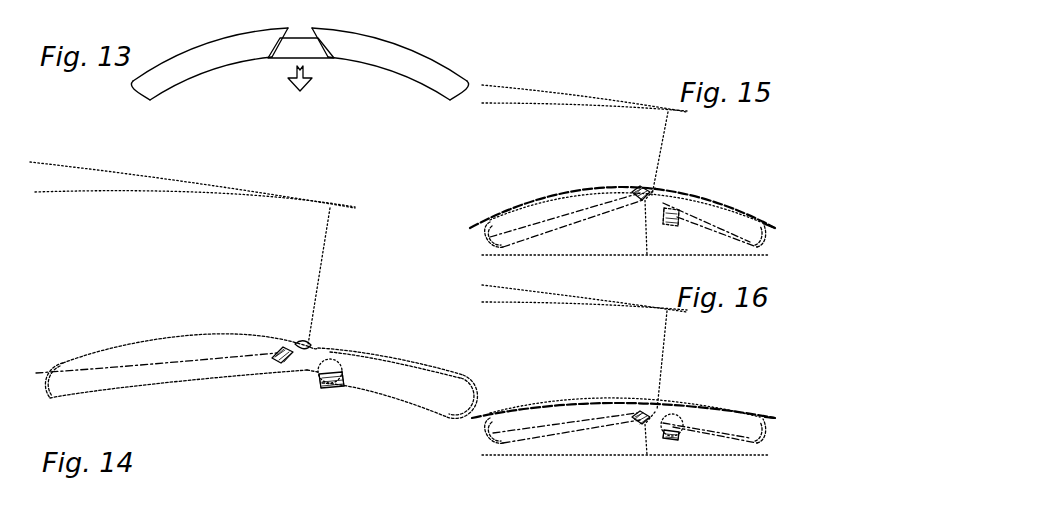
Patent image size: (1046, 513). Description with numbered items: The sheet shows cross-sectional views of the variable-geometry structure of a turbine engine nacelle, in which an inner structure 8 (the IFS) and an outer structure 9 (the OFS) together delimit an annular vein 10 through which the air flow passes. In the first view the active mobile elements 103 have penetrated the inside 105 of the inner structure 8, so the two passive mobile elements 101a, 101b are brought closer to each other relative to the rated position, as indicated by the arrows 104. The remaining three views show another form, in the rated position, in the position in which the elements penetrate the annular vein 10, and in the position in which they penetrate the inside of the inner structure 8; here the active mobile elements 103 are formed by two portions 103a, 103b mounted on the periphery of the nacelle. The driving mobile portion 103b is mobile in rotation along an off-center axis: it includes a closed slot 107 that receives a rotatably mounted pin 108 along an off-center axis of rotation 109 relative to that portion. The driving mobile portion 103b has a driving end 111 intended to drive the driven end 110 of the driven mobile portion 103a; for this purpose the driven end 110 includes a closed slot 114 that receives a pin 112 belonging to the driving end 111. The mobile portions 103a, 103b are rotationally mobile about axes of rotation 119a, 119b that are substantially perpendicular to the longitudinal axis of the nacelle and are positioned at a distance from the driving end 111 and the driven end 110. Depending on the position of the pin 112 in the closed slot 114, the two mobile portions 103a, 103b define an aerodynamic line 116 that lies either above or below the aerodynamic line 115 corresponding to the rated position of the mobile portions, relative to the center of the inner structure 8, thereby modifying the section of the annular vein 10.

In FIG. 14, the inner structure 8 is at (80, 350).
In FIG. 15, the inner structure 8 is at (510, 203).
In FIG. 16, the inner structure 8 is at (510, 398).
In FIG. 14, the outer structure 9 is at (233, 188).
In FIG. 15, the outer structure 9 is at (617, 102).
In FIG. 16, the outer structure 9 is at (640, 303).
In FIG. 13, the annular vein 10 is at (464, 51).
In FIG. 14, the annular vein 10 is at (112, 241).
In FIG. 15, the annular vein 10 is at (552, 135).
In FIG. 16, the annular vein 10 is at (552, 335).
In FIG. 13, the passive mobile element 101a is at (172, 74).
In FIG. 13, the passive mobile element 101b is at (430, 73).
In FIG. 13, the active mobile element 103 is at (297, 50).
In FIG. 14, the active mobile element 103 is at (350, 345).
In FIG. 15, the active mobile element 103 is at (694, 188).
In FIG. 16, the active mobile element 103 is at (691, 398).
In FIG. 14, the driven mobile portion 103a is at (113, 380).
In FIG. 15, the driven mobile portion 103a is at (497, 217).
In FIG. 16, the driven mobile portion 103a is at (490, 420).
In FIG. 14, the driving mobile portion 103b is at (398, 387).
In FIG. 15, the driving mobile portion 103b is at (722, 217).
In FIG. 16, the driving mobile portion 103b is at (722, 417).
In FIG. 13, the arrows 104 is at (222, 90).
In FIG. 13, the inside of the IFS 105 is at (302, 94).
In FIG. 14, the closed slot 107 is at (323, 390).
In FIG. 15, the closed slot 107 is at (668, 213).
In FIG. 16, the closed slot 107 is at (670, 437).
In FIG. 14, the pin 108 is at (317, 376).
In FIG. 15, the pin 108 is at (673, 220).
In FIG. 16, the pin 108 is at (667, 433).
In FIG. 14, the off-center axis of rotation 109 is at (323, 386).
In FIG. 15, the off-center axis of rotation 109 is at (663, 213).
In FIG. 16, the off-center axis of rotation 109 is at (668, 417).
In FIG. 14, the driven end 110 is at (277, 355).
In FIG. 15, the driven end 110 is at (633, 200).
In FIG. 16, the driven end 110 is at (632, 422).
In FIG. 14, the driving end 111 is at (287, 357).
In FIG. 15, the driving end 111 is at (643, 207).
In FIG. 16, the driving end 111 is at (640, 427).
In FIG. 14, the pin 112 is at (277, 355).
In FIG. 15, the pin 112 is at (640, 193).
In FIG. 16, the pin 112 is at (637, 413).
In FIG. 14, the closed slot 114 is at (283, 347).
In FIG. 15, the closed slot 114 is at (643, 190).
In FIG. 16, the closed slot 114 is at (643, 410).
In FIG. 14, the aerodynamic line 115 is at (463, 376).
In FIG. 15, the aerodynamic line 115 is at (602, 195).
In FIG. 16, the aerodynamic line 115 is at (577, 398).
In FIG. 15, the aerodynamic line 116 is at (773, 227).
In FIG. 16, the aerodynamic line 116 is at (773, 420).
In FIG. 14, the axis of rotation 119a is at (72, 385).
In FIG. 15, the axis of rotation 119a is at (503, 238).
In FIG. 16, the axis of rotation 119a is at (503, 436).
In FIG. 14, the axis of rotation 119b is at (447, 393).
In FIG. 15, the axis of rotation 119b is at (757, 247).
In FIG. 16, the axis of rotation 119b is at (743, 437).